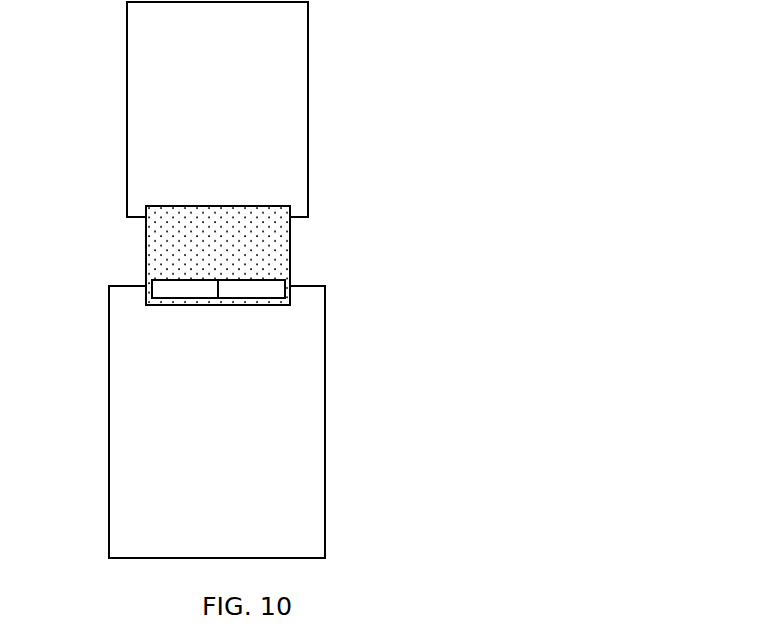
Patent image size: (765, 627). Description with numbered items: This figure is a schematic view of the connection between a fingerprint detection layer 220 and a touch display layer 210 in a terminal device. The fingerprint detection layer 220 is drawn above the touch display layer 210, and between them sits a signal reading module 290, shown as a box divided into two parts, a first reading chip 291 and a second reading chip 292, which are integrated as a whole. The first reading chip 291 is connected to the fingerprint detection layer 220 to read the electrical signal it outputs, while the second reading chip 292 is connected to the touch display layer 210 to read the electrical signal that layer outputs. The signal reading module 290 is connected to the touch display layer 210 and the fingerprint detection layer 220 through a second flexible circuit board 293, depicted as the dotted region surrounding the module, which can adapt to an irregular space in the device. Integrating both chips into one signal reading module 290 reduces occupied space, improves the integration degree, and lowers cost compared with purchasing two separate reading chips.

The touch display layer 210 is at (294, 414).
The fingerprint detection layer 220 is at (283, 71).
The signal reading module 290 is at (233, 254).
The first reading chip 291 is at (170, 287).
The second reading chip 292 is at (273, 287).
The second flexible circuit board 293 is at (273, 217).